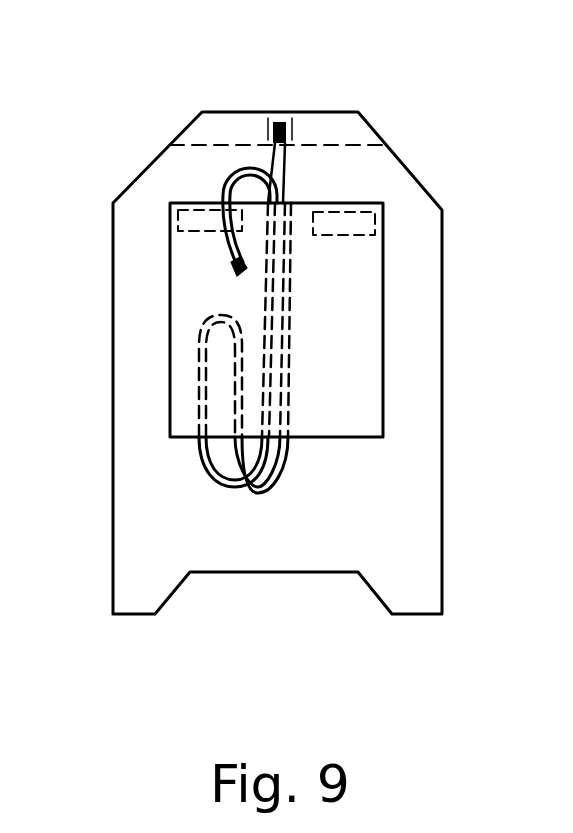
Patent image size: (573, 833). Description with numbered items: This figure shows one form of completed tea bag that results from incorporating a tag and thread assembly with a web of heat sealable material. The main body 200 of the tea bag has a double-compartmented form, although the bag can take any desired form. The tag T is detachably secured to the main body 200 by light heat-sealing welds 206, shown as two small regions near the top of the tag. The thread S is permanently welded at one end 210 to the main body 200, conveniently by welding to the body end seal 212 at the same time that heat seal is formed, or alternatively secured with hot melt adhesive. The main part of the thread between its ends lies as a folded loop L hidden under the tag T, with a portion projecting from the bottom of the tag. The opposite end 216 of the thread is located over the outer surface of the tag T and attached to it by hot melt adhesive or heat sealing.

The main body 200 is at (407, 433).
The body end seal 212 is at (220, 128).
The tag T is at (370, 351).
The light heat-sealing welds 206 is at (195, 220).
The end of thread 210 is at (282, 125).
The sensor S is at (280, 168).
The opposite end of thread 216 is at (234, 268).
The folded loop L is at (265, 486).